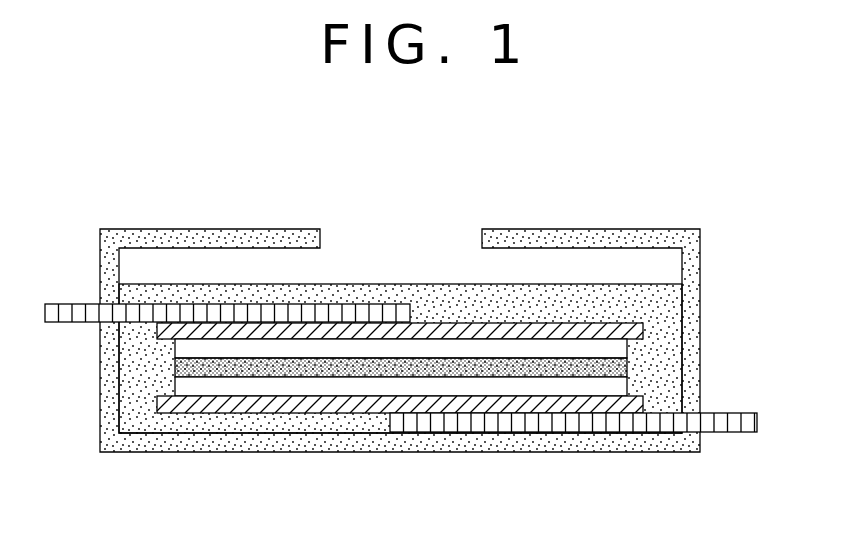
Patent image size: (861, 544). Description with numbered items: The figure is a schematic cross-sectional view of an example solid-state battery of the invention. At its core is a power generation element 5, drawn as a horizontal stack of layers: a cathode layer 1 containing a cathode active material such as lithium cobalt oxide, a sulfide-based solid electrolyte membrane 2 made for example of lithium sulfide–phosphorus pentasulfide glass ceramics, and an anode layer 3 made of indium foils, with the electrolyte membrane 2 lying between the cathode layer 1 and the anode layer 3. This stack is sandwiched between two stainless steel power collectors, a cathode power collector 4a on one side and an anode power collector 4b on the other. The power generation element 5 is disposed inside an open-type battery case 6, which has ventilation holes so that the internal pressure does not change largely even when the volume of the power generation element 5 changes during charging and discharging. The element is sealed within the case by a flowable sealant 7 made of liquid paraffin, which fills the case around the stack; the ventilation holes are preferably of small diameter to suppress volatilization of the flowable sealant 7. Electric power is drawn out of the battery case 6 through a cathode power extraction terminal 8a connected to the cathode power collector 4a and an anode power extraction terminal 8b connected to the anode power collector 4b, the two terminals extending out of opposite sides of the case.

The cathode layer 1 is at (627, 347).
The sulfide-based solid electrolyte membrane 2 is at (627, 365).
The anode layer 3 is at (627, 390).
The cathode power collector 4a is at (643, 328).
The anode power collector 4b is at (643, 405).
The power generation element 5 is at (496, 368).
The battery case 6 is at (507, 240).
The flowable sealant 7 is at (553, 307).
The cathode power extraction terminal 8a is at (293, 307).
The anode power extraction terminal 8b is at (592, 432).